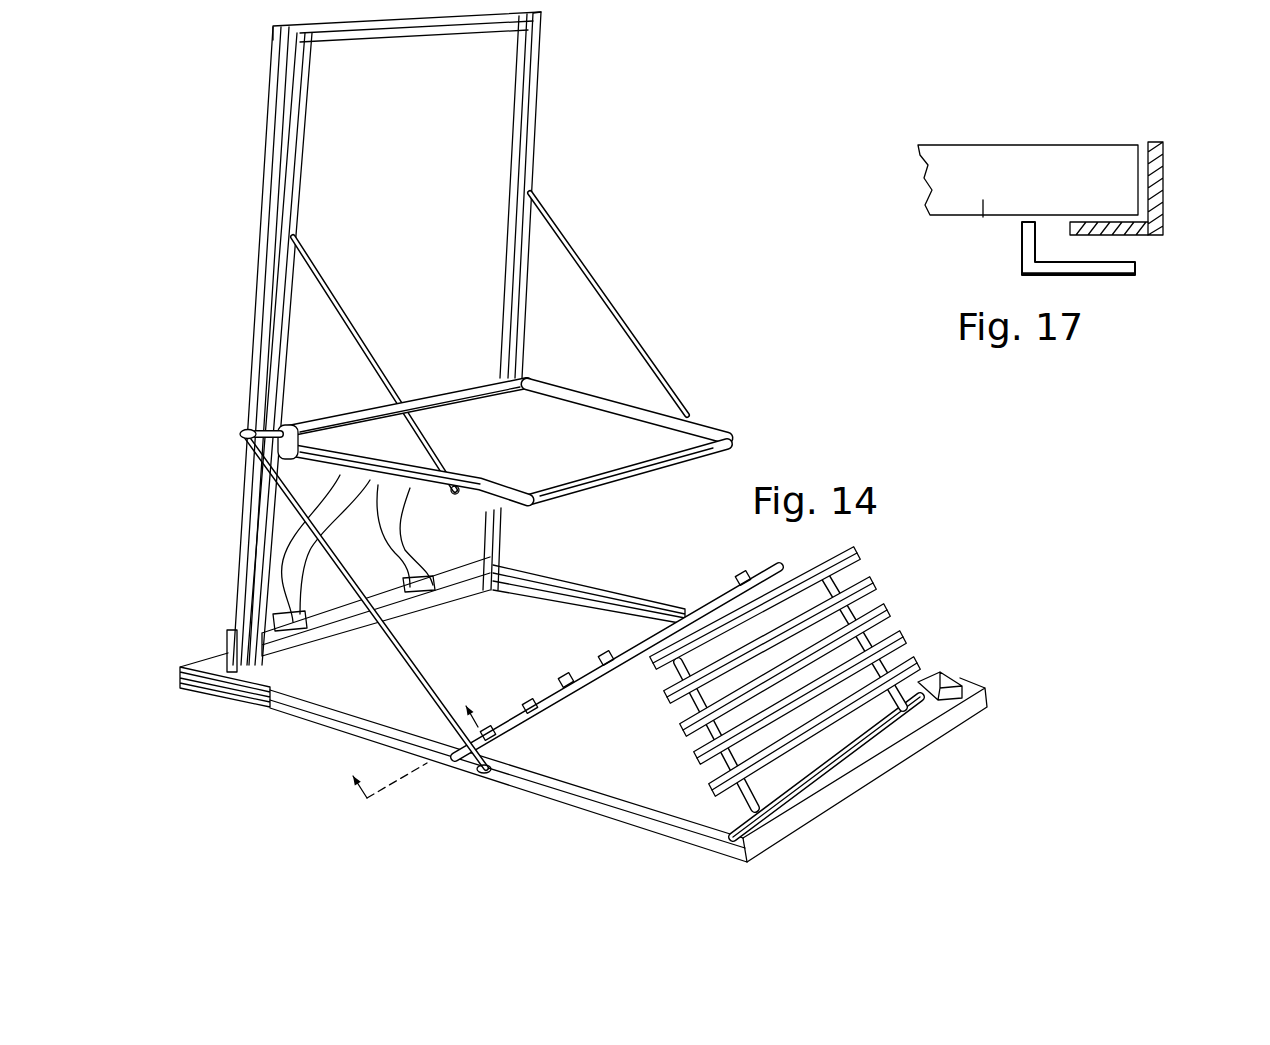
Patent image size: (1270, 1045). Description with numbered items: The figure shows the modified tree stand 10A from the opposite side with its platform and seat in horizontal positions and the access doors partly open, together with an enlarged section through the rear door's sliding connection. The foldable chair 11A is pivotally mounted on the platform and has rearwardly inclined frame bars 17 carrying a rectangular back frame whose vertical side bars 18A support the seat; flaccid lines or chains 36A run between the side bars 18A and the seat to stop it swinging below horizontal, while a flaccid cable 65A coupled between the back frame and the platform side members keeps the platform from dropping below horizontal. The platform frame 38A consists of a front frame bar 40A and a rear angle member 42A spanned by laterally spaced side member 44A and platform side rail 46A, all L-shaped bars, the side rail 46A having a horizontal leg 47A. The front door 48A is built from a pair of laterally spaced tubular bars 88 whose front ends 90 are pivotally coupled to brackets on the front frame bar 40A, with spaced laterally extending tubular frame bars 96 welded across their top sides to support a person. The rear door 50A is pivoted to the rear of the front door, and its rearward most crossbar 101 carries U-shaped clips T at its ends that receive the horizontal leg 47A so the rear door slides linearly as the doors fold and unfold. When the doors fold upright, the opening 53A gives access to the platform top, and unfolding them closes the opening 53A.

In FIG. 14, the tree stand 10A is at (585, 168).
In FIG. 14, the foldable chair 11A is at (634, 300).
In FIG. 14, the frame bars 17 is at (400, 736).
In FIG. 14, the vertical side bars 18A is at (289, 161).
In FIG. 14, the flaccid lines or chains 36A is at (576, 249).
In FIG. 14, the platform frame 38A is at (569, 738).
In FIG. 14, the front frame bar 40A is at (873, 777).
In FIG. 14, the rear angle member 42A is at (214, 662).
In FIG. 14, the side member 44A is at (509, 782).
In FIG. 14, the platform side rail 46A is at (580, 588).
In FIG. 17, the platform side rail 46A is at (1186, 179).
In FIG. 17, the horizontal leg 47A is at (1110, 228).
In FIG. 14, the front door 48A is at (805, 677).
In FIG. 14, the rear door 50A is at (746, 577).
In FIG. 17, the rear door 50A is at (983, 217).
In FIG. 14, the opening 53A is at (305, 685).
In FIG. 14, the flaccid cable 65A is at (397, 650).
In FIG. 14, the tubular bars 88 is at (703, 740).
In FIG. 14, the front ends 90 is at (927, 687).
In FIG. 14, the tubular frame bars 96 is at (866, 583).
In FIG. 14, the rearward most crossbar 101 is at (546, 694).
In FIG. 17, the rearward most crossbar 101 is at (1007, 160).
In FIG. 17, the U-shaped clips T is at (1137, 265).